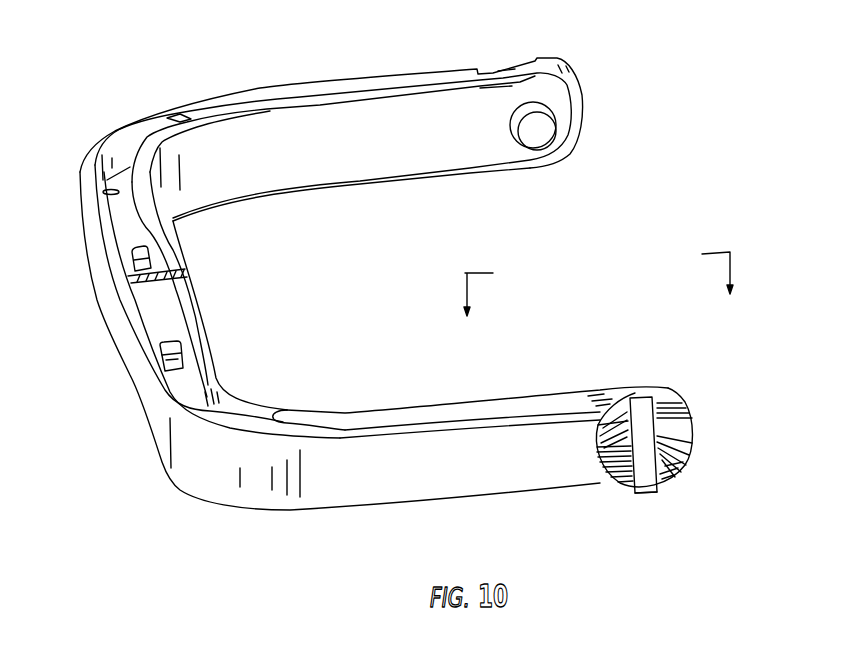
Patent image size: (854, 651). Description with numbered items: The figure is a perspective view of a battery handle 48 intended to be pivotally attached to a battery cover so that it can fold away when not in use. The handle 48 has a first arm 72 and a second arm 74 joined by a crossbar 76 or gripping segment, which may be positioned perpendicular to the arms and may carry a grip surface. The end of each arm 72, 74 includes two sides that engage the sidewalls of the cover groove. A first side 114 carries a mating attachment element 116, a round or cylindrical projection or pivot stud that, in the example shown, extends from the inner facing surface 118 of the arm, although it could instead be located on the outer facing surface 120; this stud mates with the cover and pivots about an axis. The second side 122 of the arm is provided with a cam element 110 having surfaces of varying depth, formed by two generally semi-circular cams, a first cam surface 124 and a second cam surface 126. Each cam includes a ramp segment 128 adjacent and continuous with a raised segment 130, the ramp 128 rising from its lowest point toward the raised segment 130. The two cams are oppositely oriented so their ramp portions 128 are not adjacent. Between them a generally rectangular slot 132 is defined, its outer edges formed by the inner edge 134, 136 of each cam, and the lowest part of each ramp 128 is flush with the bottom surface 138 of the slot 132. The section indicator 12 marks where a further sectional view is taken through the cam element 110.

The battery handle 48 is at (83, 93).
The second arm 74 is at (387, 78).
The second side 122 is at (443, 70).
The mating attachment element 116 is at (547, 137).
The inner facing surface 118 is at (491, 151).
The first side 114 is at (413, 137).
The crossbar 76 is at (104, 282).
The first arm 72 is at (537, 403).
The outer facing surface 120 is at (501, 480).
The first cam surface 124 is at (600, 428).
The ramp segment 128 is at (621, 406).
The slot 132 is at (643, 398).
The cam element 110 is at (670, 397).
The raised segment 130 is at (670, 427).
The second cam surface 126 is at (697, 440).
The bottom surface 138 is at (684, 456).
The inner edge 134 is at (648, 490).
The inner edge 136 is at (600, 433).
The section line for FIG. 12 is at (601, 302).